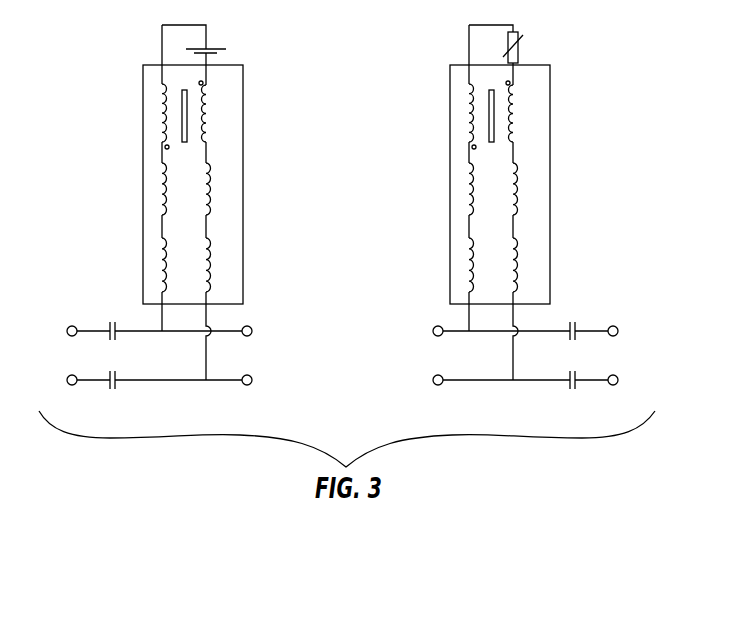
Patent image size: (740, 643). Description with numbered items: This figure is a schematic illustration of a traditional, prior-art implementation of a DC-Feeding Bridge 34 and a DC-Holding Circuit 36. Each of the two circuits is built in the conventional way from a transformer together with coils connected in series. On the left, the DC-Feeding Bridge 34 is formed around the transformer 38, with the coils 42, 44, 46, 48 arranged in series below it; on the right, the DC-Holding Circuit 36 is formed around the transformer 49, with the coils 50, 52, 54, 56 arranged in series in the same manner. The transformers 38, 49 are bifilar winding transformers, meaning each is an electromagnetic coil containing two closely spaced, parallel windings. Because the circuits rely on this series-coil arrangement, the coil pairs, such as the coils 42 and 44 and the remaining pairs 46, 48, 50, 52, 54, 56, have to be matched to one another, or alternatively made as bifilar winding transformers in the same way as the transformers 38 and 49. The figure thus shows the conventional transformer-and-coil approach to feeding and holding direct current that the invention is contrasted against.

The DC-Feeding Bridge 34 is at (132, 99).
The DC-Holding Circuit 36 is at (439, 99).
The transformer 38 is at (187, 116).
The coil 42 is at (162, 186).
The coil 44 is at (214, 190).
The coil 46 is at (162, 261).
The coil 48 is at (214, 265).
The transformer 49 is at (494, 116).
The coil 50 is at (469, 186).
The coil 52 is at (521, 190).
The coil 54 is at (469, 261).
The coil 56 is at (521, 265).